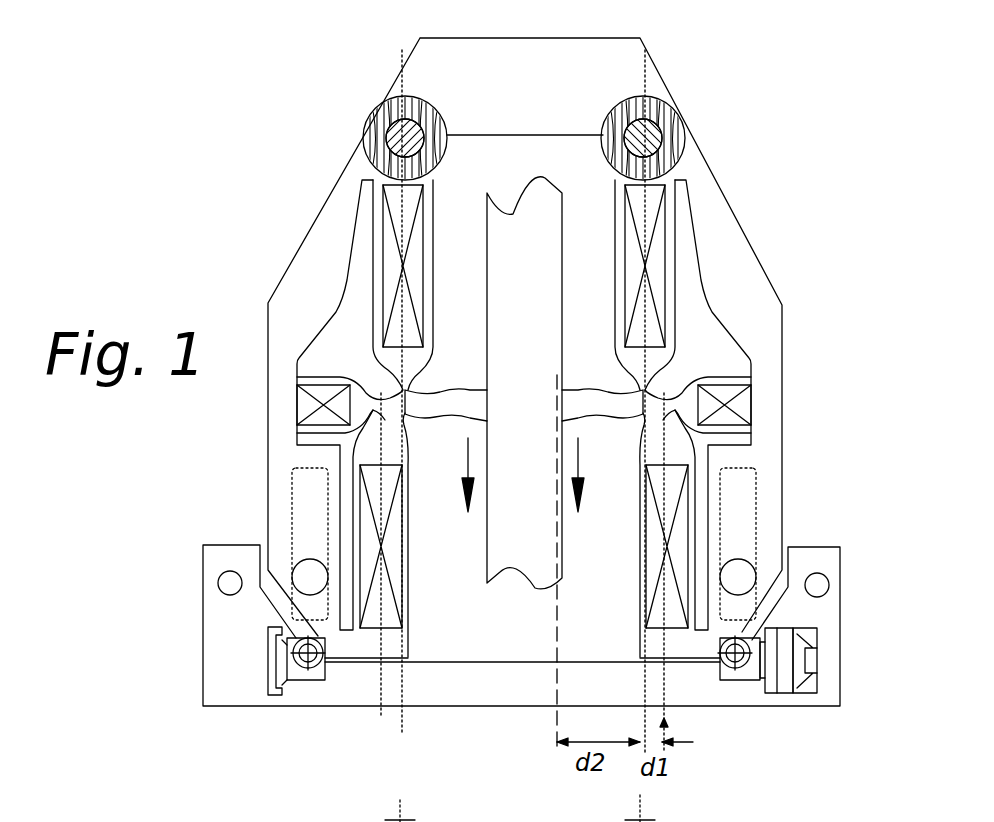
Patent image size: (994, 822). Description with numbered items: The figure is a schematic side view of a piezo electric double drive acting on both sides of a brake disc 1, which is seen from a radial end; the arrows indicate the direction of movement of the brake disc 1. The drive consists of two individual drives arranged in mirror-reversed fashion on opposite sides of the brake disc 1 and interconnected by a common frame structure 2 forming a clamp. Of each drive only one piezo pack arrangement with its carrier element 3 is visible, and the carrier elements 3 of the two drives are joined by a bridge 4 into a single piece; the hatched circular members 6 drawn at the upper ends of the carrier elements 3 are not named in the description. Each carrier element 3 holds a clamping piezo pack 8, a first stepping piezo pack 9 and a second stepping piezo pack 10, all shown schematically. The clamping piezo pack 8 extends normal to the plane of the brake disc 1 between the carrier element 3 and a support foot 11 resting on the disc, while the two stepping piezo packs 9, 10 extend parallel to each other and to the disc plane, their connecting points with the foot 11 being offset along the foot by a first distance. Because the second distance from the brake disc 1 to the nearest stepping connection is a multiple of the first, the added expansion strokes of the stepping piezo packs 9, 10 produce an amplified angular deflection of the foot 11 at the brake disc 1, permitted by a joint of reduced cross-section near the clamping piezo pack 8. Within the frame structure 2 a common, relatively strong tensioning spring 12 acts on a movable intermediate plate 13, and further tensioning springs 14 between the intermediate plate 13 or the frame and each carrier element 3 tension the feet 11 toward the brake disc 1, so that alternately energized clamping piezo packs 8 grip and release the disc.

The brake disc 1 is at (545, 535).
The frame structure 2 is at (523, 690).
The carrier element 3 is at (313, 265).
The bridge 4 is at (607, 75).
The guide rod 6 is at (392, 135).
The clamping piezo pack 8 is at (302, 405).
The first stepping piezo pack 9 is at (398, 205).
The second stepping piezo pack 10 is at (363, 522).
The support foot 11 is at (580, 403).
The tensioning spring 12 is at (803, 683).
The intermediate plate 13 is at (787, 680).
The tensioning spring 14 is at (290, 677).